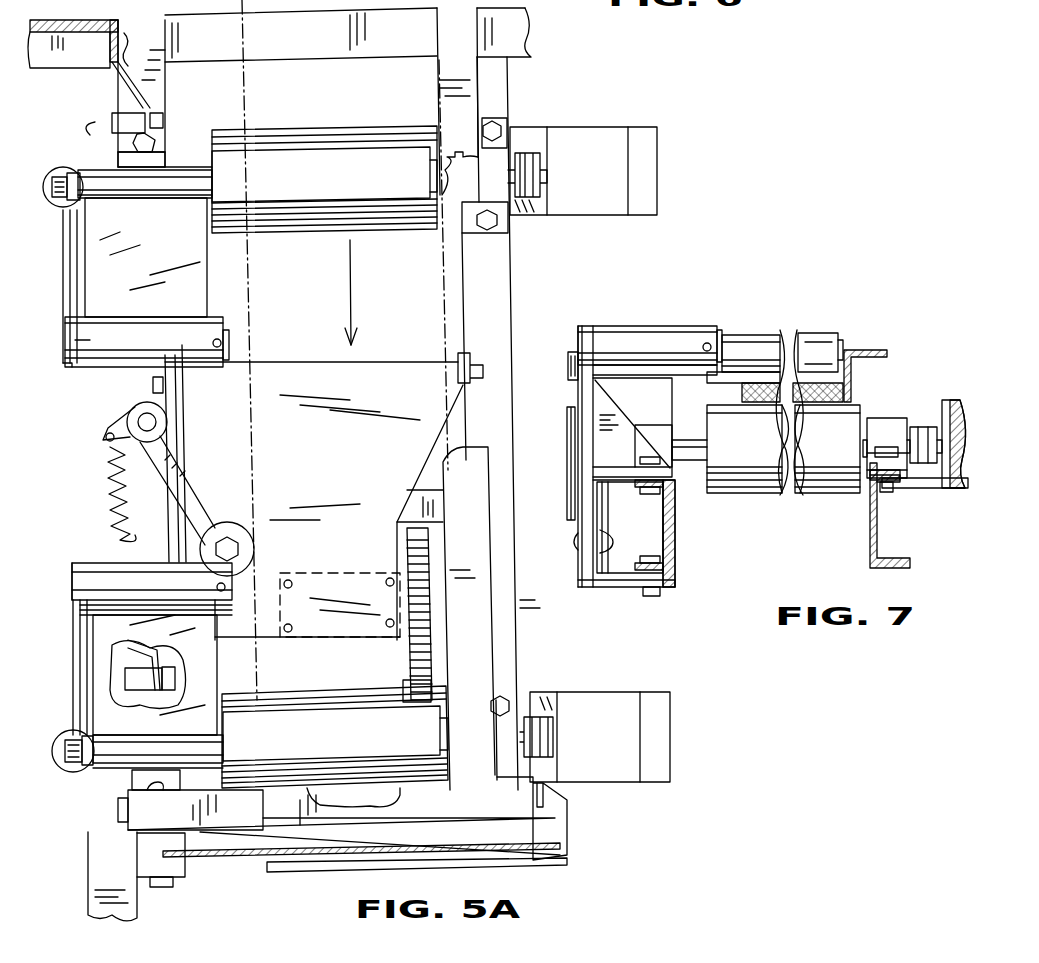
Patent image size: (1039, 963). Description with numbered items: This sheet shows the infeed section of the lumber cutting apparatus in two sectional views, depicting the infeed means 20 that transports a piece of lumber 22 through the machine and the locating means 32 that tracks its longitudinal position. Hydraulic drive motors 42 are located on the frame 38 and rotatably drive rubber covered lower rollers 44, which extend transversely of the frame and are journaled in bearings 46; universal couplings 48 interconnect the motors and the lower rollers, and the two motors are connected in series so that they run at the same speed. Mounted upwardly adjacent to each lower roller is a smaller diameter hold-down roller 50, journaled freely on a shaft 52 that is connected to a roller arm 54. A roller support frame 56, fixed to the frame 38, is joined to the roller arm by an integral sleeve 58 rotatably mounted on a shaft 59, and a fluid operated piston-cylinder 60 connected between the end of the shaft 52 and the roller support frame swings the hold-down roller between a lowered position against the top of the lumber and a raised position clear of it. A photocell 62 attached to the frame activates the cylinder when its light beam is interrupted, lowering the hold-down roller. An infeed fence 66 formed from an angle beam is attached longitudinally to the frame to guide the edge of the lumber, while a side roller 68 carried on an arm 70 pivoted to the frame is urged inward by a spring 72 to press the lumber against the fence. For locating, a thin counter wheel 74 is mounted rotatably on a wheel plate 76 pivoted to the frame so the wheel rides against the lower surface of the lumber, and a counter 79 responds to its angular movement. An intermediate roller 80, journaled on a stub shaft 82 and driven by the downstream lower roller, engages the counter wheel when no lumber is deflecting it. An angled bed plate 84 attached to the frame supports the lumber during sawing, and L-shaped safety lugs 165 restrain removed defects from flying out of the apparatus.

In FIG. 5A, the infeed means 20 is at (545, 287).
In FIG. 7, the infeed means 20 is at (772, 298).
In FIG. 5A, the piece of lumber 22 is at (242, 90).
In FIG. 7, the piece of lumber 22 is at (742, 392).
In FIG. 5A, the locating means 32 is at (440, 545).
In FIG. 5A, the frame 38 is at (143, 30).
In FIG. 7, the frame 38 is at (675, 547).
In FIG. 5A, the hydraulic drive motors 42 is at (645, 167).
In FIG. 7, the hydraulic drive motors 42 is at (950, 402).
In FIG. 5A, the lower rollers 44 is at (312, 140).
In FIG. 7, the lower rollers 44 is at (812, 492).
In FIG. 5A, the bearings 46 is at (165, 166).
In FIG. 7, the bearings 46 is at (660, 437).
In FIG. 5A, the universal couplings 48 is at (537, 197).
In FIG. 7, the universal couplings 48 is at (922, 427).
In FIG. 5A, the hold-down roller 50 is at (372, 165).
In FIG. 7, the hold-down roller 50 is at (781, 337).
In FIG. 5A, the shaft 52 is at (112, 180).
In FIG. 7, the shaft 52 is at (838, 340).
In FIG. 5A, the roller arm 54 is at (100, 287).
In FIG. 5A, the roller support frame 56 is at (73, 348).
In FIG. 7, the roller support frame 56 is at (585, 400).
In FIG. 5A, the integral sleeve 58 is at (100, 357).
In FIG. 7, the integral sleeve 58 is at (662, 335).
In FIG. 5A, the shaft 59 is at (230, 340).
In FIG. 7, the shaft 59 is at (723, 338).
In FIG. 5A, the fluid operated piston-cylinder 60 is at (60, 170).
In FIG. 7, the fluid operated piston-cylinder 60 is at (571, 482).
In FIG. 5A, the photocell 62 is at (115, 115).
In FIG. 5A, the infeed fence 66 is at (470, 625).
In FIG. 7, the infeed fence 66 is at (880, 355).
In FIG. 5A, the side roller 68 is at (250, 550).
In FIG. 5A, the arm 70 is at (190, 487).
In FIG. 5A, the spring 72 is at (112, 502).
In FIG. 5A, the counter wheel 74 is at (410, 642).
In FIG. 5A, the wheel plate 76 is at (310, 377).
In FIG. 5A, the counter 79 is at (332, 572).
In FIG. 5A, the intermediate roller 80 is at (410, 692).
In FIG. 5A, the stub shaft 82 is at (232, 857).
In FIG. 5A, the angled bed plate 84 is at (140, 817).
In FIG. 5A, the L-shaped safety lugs 165 is at (305, 868).